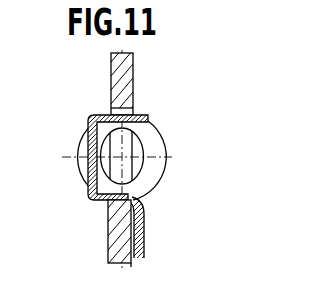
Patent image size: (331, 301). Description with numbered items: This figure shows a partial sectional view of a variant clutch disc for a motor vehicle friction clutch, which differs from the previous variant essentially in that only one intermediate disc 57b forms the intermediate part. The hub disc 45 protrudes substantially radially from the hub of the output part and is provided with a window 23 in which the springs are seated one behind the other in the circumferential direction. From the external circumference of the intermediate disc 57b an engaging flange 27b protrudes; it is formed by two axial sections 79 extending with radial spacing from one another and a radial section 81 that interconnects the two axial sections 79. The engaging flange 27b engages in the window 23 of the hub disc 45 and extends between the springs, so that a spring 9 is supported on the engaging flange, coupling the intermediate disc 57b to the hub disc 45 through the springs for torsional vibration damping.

The spring 9 is at (152, 175).
The window 23 is at (128, 143).
The engaging flange 27b is at (84, 183).
The hub disc 45 is at (123, 65).
The intermediate disc 57b is at (147, 230).
The axial section 79 is at (107, 114).
The radial section 81 is at (88, 128).